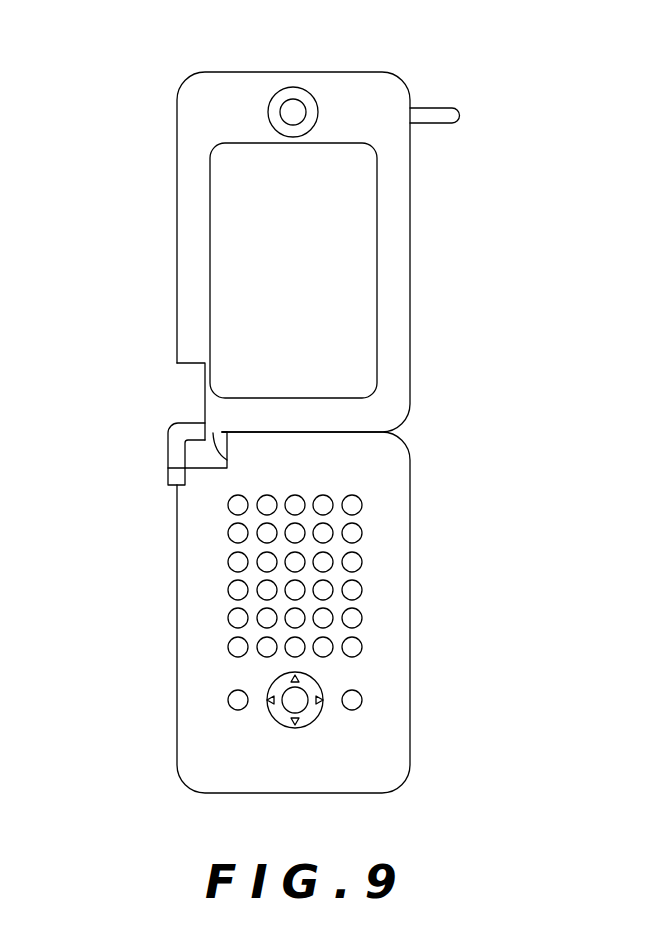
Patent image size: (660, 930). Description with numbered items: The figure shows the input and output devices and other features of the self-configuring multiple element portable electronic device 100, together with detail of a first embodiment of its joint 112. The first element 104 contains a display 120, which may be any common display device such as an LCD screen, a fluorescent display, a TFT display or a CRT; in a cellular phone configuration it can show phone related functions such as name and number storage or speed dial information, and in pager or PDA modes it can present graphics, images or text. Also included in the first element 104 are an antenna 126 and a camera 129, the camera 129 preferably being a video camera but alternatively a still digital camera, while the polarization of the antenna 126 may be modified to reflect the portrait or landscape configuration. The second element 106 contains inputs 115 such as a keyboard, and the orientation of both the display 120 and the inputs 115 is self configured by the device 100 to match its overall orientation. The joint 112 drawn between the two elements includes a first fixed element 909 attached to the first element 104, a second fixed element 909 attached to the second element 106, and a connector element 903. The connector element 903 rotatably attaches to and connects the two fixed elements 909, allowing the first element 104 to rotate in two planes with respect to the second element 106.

The self-configuring multiple element portable electronic device 100 is at (163, 814).
The first element 104 is at (177, 233).
The second element 106 is at (177, 672).
The joint 112 is at (186, 429).
The inputs 115 is at (417, 492).
The display 120 is at (362, 268).
The antenna 126 is at (433, 109).
The camera 129 is at (293, 87).
The connector element 903 is at (177, 421).
The fixed element 909 is at (182, 472).